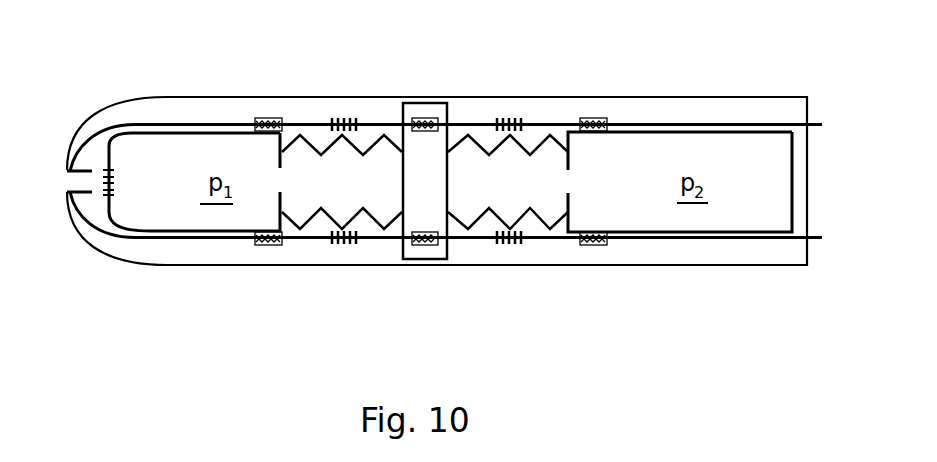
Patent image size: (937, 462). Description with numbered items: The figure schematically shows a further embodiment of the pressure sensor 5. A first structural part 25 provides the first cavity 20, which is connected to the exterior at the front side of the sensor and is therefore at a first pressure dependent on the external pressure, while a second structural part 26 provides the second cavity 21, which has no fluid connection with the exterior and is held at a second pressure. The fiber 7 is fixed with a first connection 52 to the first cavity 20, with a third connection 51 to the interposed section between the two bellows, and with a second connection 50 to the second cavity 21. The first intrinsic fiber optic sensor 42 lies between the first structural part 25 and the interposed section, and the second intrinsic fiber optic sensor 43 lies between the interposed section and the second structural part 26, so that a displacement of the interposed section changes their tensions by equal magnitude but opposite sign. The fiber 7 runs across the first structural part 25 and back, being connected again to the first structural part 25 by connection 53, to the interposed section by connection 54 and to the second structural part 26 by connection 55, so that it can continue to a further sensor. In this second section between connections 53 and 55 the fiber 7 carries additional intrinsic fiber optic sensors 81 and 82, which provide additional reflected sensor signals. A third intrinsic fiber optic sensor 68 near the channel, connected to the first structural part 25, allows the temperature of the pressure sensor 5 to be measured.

The pressure sensor 5 is at (743, 97).
The fiber 7 is at (812, 242).
The first cavity 20 is at (92, 147).
The second cavity 21 is at (792, 160).
The first structural part 25 is at (137, 128).
The second structural part 26 is at (662, 130).
The first intrinsic fiber optic sensor 42 is at (338, 248).
The second intrinsic fiber optic sensor 43 is at (508, 248).
The second connection 50 is at (592, 243).
The third connection 51 is at (418, 243).
The first connection 52 is at (263, 243).
The connection 53 is at (267, 118).
The connection 54 is at (423, 118).
The connection 55 is at (590, 118).
The third intrinsic fiber optic sensor 68 is at (113, 178).
The additional intrinsic fiber optic sensor 81 is at (345, 113).
The additional intrinsic fiber optic sensor 82 is at (512, 113).